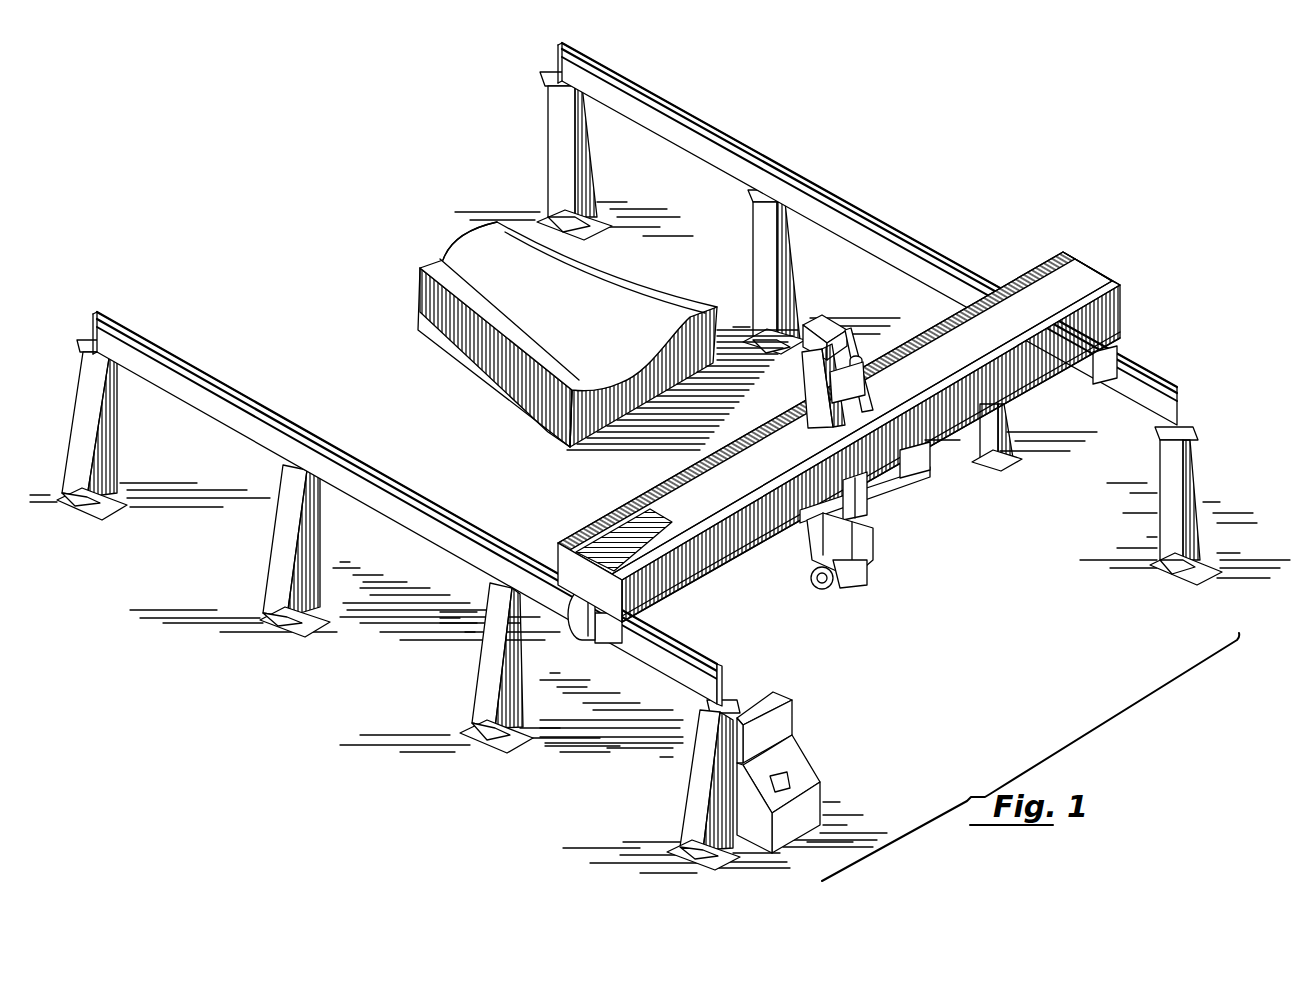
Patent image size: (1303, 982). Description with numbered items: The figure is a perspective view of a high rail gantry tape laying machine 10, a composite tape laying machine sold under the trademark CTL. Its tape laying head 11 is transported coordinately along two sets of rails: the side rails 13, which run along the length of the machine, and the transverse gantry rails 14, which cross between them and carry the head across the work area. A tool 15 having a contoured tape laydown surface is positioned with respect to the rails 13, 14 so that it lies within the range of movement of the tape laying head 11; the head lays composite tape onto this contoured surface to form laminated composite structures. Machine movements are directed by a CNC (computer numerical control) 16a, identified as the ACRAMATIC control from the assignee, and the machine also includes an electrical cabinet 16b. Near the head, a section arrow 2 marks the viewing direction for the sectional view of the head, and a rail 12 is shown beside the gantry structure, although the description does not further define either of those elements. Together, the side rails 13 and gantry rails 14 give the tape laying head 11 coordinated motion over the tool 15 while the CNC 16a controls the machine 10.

The high rail gantry tape laying machine 10 is at (1115, 269).
The tape laying head 11 is at (838, 599).
The rear guide rail with support posts 12 is at (1153, 373).
The side rails 13 is at (703, 653).
The transverse gantry rails 14 is at (708, 580).
The tool 15 is at (612, 342).
The CNC (computer numerical control) 16a is at (813, 763).
The electrical cabinet 16b is at (795, 715).
The section view direction of FIG. 2 is at (943, 531).